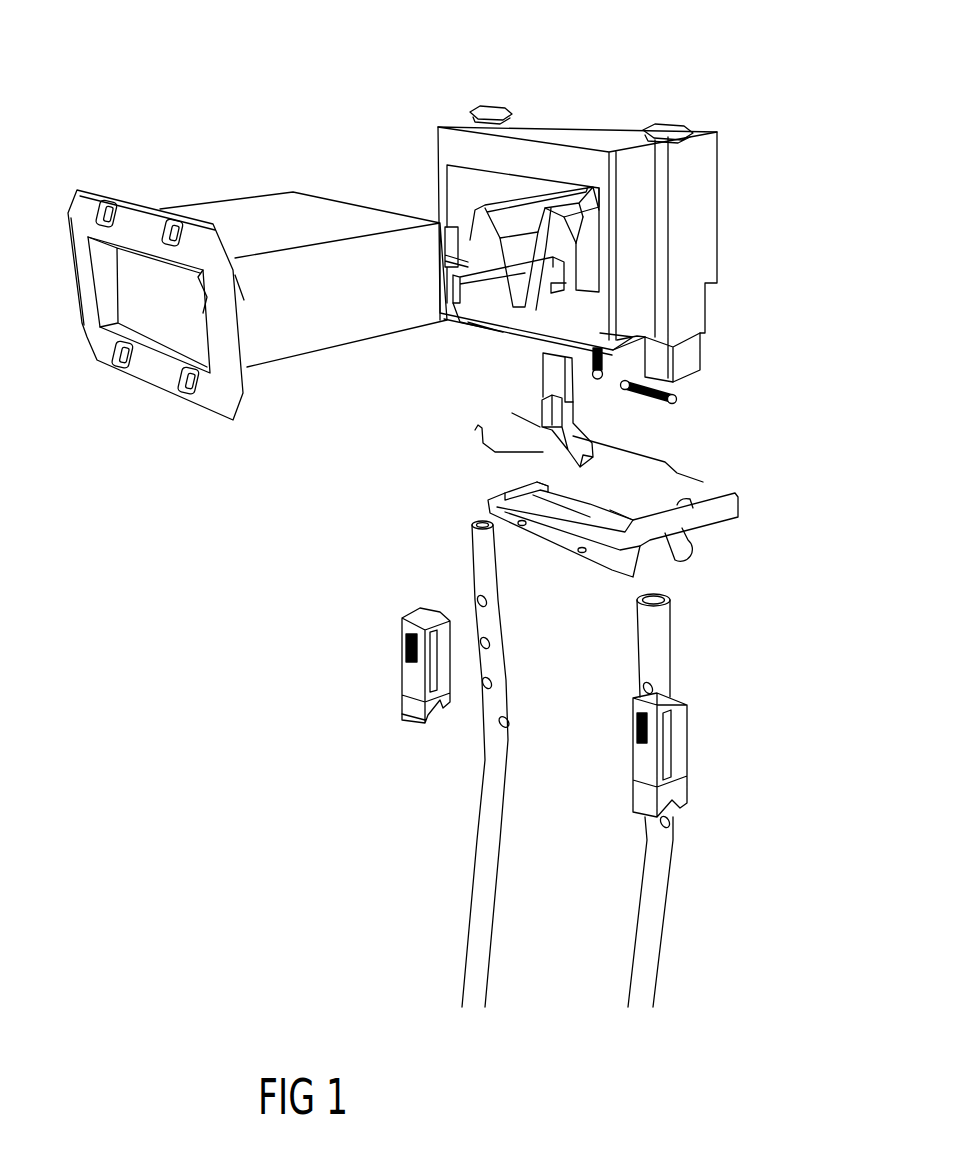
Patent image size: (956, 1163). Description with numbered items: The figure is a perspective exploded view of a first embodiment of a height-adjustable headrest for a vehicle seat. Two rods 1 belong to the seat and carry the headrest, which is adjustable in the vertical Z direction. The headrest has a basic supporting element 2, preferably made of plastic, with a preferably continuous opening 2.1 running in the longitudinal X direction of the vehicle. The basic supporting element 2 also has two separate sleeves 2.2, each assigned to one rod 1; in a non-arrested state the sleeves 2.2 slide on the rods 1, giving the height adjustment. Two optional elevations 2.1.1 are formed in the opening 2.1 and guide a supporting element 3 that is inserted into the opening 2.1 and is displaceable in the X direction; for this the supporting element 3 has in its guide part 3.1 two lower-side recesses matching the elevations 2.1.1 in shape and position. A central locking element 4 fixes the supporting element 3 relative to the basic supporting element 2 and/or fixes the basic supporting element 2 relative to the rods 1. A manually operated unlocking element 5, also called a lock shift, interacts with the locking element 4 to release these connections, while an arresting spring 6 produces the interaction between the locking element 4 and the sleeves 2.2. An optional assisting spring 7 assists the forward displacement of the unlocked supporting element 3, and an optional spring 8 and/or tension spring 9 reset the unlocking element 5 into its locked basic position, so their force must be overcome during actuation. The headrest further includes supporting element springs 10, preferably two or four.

The rod 1 is at (490, 807).
The basic supporting element 2 is at (555, 120).
The opening 2.1 is at (455, 177).
The elevation 2.1.1 is at (503, 212).
The sleeve 2.2 is at (407, 675).
The supporting element 3 is at (82, 192).
The guide part 3.1 is at (240, 213).
The locking element 4 is at (553, 377).
The unlocking element 5 is at (722, 512).
The arresting spring 6 is at (703, 482).
The assisting spring 7 is at (476, 436).
The spring 8 is at (603, 363).
The tension spring 9 is at (676, 400).
The supporting element spring 10 is at (442, 222).